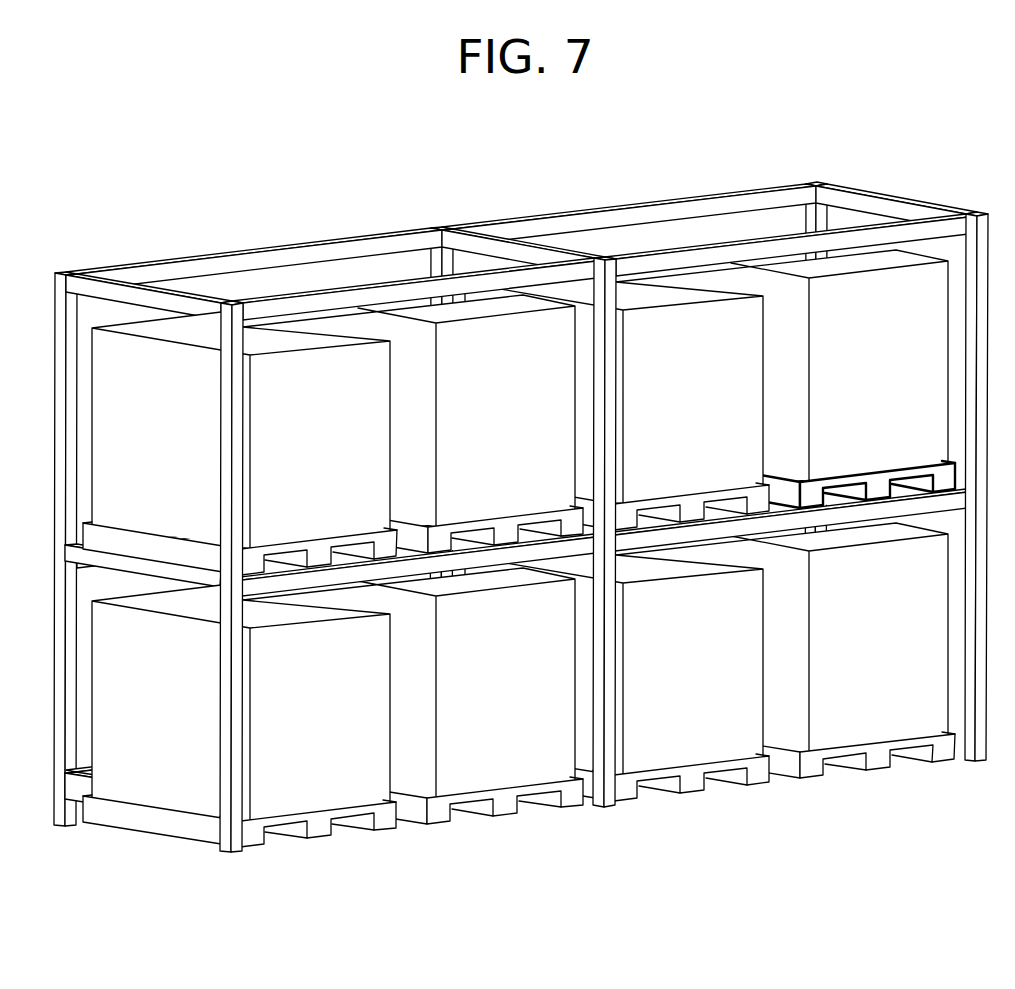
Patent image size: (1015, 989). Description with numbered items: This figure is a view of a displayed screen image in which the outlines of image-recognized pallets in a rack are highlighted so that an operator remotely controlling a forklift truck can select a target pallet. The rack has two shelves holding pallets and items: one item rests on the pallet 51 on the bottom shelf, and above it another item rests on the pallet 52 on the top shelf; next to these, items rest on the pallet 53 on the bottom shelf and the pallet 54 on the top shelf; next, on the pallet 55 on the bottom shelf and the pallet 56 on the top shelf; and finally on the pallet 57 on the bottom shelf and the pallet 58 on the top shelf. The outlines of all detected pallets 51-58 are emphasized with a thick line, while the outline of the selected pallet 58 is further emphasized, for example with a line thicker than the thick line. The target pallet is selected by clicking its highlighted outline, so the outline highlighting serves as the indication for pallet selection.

The pallet 51 is at (320, 828).
The pallet 52 is at (320, 553).
The pallet 53 is at (507, 805).
The pallet 54 is at (507, 532).
The pallet 55 is at (690, 785).
The pallet 56 is at (693, 505).
The pallet 57 is at (880, 757).
The pallet 58 is at (878, 485).